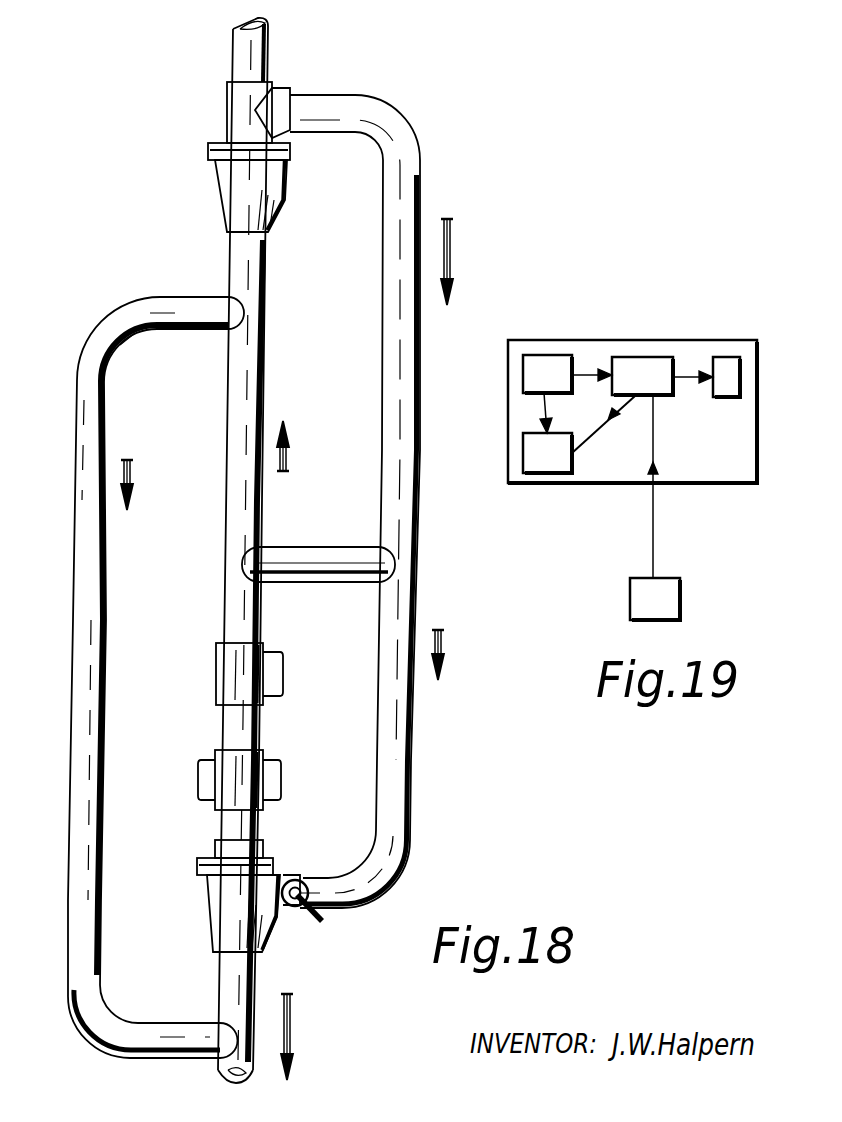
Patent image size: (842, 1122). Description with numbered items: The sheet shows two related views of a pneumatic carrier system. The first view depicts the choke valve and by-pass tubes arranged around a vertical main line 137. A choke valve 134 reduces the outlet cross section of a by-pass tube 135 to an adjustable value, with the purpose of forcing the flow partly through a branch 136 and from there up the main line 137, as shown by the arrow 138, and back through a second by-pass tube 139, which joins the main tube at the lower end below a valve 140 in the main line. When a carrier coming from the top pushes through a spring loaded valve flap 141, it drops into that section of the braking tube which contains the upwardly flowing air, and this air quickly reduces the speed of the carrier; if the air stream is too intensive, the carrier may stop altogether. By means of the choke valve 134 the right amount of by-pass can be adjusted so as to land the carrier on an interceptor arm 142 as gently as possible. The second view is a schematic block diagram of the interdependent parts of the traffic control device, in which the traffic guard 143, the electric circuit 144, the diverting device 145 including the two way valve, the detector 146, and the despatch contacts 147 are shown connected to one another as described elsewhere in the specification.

In FIG. 18, the choke valve 134 is at (296, 908).
In FIG. 18, the by-pass tube 135 is at (412, 172).
In FIG. 18, the branch 136 is at (290, 555).
In FIG. 18, the main line 137 is at (260, 382).
In FIG. 18, the arrow 138 is at (282, 462).
In FIG. 18, the second by-pass tube 139 is at (97, 812).
In FIG. 18, the valve 140 is at (222, 916).
In FIG. 18, the spring loaded valve flap 141 is at (273, 221).
In FIG. 18, the interceptor arm 142 is at (214, 764).
In FIG. 19, the traffic guard 143 is at (540, 360).
In FIG. 19, the electric circuit 144 is at (638, 360).
In FIG. 19, the diverting device 145 is at (727, 362).
In FIG. 19, the detector 146 is at (538, 465).
In FIG. 19, the despatch contacts 147 is at (672, 590).